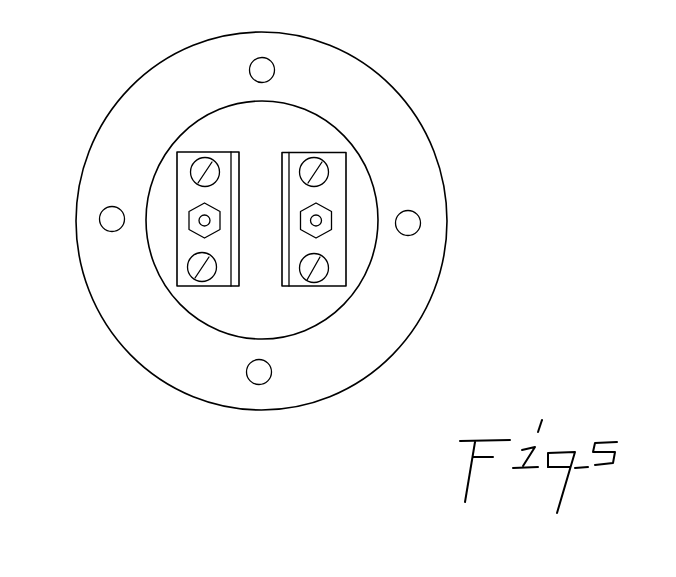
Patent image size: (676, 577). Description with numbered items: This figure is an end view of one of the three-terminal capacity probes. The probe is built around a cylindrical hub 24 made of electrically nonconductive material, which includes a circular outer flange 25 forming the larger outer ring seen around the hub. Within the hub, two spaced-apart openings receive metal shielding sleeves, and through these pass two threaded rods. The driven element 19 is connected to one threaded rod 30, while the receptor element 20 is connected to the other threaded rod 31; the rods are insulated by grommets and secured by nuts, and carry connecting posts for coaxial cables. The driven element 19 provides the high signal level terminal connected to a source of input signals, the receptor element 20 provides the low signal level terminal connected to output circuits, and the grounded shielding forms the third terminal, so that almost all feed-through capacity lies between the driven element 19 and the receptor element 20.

The driven element 19 is at (290, 265).
The receptor element 20 is at (237, 237).
The cylindrical hub 24 is at (307, 130).
The circular outer flange 25 is at (430, 268).
The threaded rod 30 is at (204, 221).
The threaded rod 31 is at (317, 221).